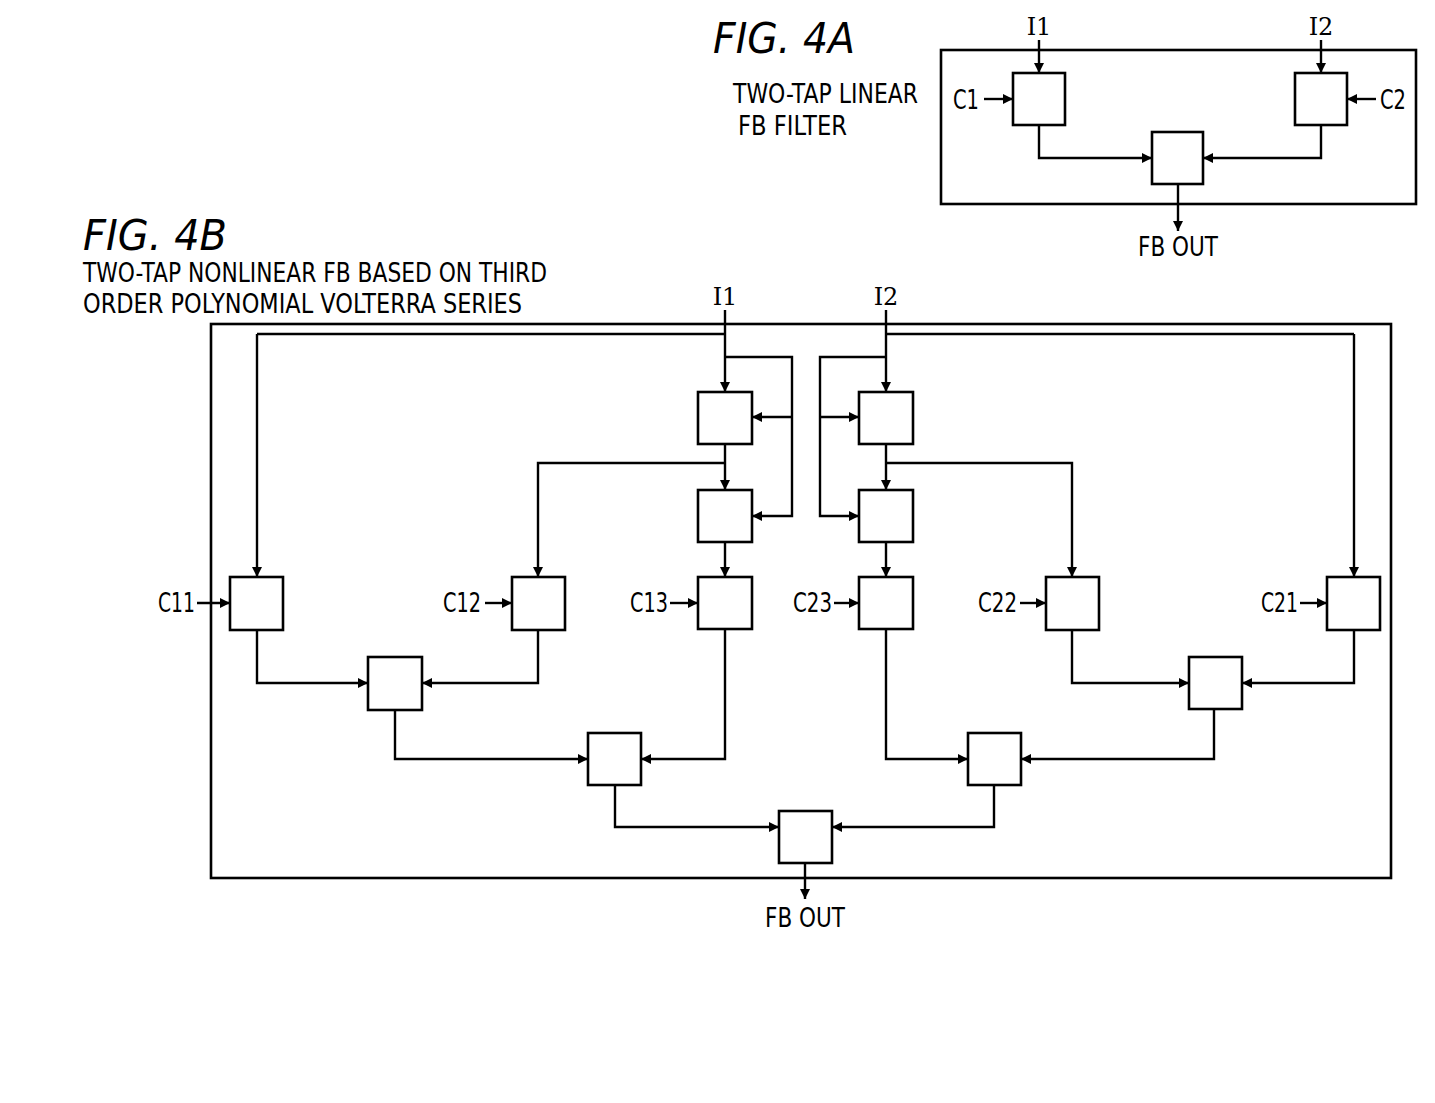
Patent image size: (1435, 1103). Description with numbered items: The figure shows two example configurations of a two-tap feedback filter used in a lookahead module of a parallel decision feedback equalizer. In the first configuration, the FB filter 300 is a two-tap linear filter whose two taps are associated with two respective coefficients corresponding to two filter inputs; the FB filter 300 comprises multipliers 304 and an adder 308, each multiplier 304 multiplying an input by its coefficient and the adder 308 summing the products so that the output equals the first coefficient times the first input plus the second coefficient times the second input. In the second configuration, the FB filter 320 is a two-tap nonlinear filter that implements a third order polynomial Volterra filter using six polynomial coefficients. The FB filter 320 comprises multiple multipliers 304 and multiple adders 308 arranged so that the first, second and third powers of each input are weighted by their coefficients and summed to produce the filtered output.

In FIG. 4A, the FB filter 300 is at (941, 180).
In FIG. 4A, the multiplier 304 is at (1023, 125).
In FIG. 4B, the multiplier 304 is at (698, 418).
In FIG. 4A, the adder 308 is at (1178, 132).
In FIG. 4B, the adder 308 is at (401, 657).
In FIG. 4B, the FB filter 320 is at (652, 324).